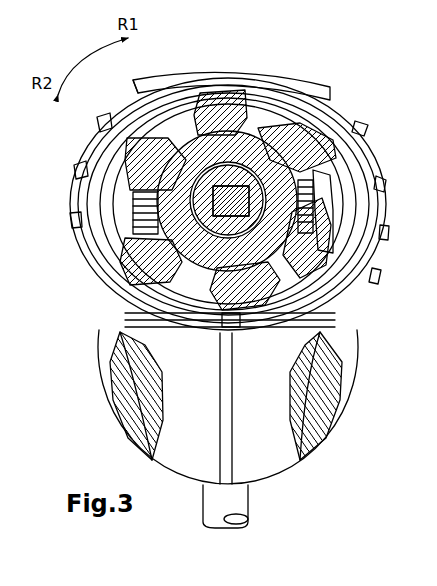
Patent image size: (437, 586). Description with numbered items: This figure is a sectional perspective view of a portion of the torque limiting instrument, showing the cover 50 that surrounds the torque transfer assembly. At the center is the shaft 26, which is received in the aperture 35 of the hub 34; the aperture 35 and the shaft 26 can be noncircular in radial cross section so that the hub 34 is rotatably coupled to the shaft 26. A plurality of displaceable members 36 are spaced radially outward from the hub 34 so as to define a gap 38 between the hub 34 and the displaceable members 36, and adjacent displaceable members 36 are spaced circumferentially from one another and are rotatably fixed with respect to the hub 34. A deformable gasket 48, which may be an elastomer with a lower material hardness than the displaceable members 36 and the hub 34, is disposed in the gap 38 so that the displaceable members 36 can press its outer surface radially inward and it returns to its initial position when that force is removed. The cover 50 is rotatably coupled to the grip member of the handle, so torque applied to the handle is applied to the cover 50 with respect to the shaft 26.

The shaft 26 is at (190, 209).
The hub 34 is at (336, 151).
The aperture 35 is at (222, 182).
The displaceable member 36 is at (333, 255).
The gap 38 is at (256, 128).
The deformable gasket 48 is at (303, 191).
The cover 50 is at (345, 118).